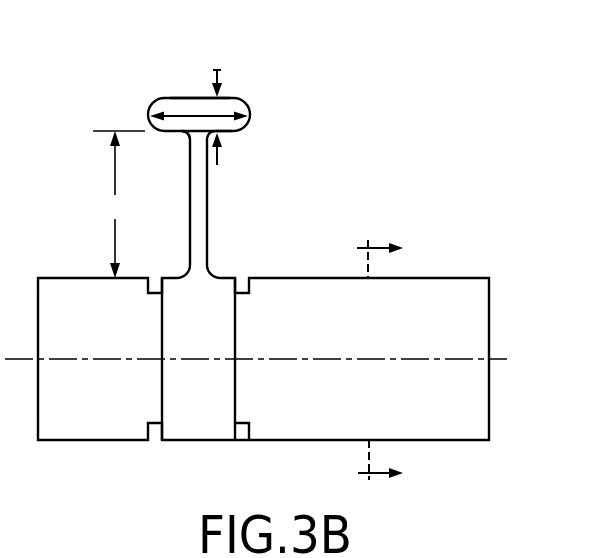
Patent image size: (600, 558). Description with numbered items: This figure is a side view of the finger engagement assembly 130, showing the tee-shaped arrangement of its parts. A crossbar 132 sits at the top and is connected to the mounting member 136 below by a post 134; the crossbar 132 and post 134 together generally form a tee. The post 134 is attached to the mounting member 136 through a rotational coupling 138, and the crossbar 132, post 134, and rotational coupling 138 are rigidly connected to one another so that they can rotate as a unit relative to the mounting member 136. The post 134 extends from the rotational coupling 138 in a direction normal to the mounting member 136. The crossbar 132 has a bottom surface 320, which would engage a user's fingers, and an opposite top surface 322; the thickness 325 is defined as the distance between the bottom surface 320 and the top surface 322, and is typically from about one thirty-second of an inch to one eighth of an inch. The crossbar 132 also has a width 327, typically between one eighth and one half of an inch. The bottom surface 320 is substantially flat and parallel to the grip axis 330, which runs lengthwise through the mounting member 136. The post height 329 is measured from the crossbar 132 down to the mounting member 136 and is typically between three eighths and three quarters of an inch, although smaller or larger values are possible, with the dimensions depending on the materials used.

The finger engagement assembly 130 is at (331, 44).
The crossbar 132 is at (133, 90).
The post 134 is at (200, 218).
The mounting member 136 is at (284, 396).
The rotational coupling 138 is at (181, 386).
The bottom surface 320 is at (233, 132).
The top surface 322 is at (241, 98).
The thickness 325 is at (219, 70).
The width 327 is at (173, 117).
The post height 329 is at (119, 204).
The grip axis 330 is at (463, 359).